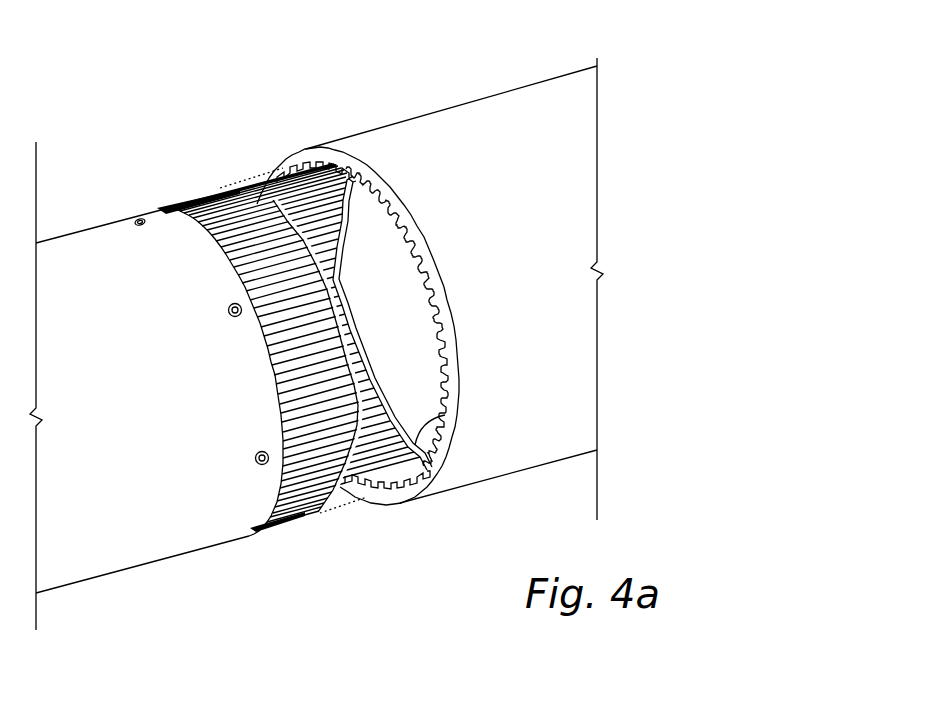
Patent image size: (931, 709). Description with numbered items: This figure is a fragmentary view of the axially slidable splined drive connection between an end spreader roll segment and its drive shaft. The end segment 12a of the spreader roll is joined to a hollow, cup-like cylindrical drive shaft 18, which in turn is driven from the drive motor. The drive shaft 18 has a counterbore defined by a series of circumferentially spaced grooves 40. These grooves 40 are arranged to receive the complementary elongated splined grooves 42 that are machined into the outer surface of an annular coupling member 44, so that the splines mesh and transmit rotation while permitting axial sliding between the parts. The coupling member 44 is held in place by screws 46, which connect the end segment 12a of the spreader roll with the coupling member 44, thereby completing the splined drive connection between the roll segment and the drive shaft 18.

The end segment 12a is at (57, 277).
The drive shaft 18 is at (366, 150).
The grooves 40 is at (402, 490).
The splined grooves 42 is at (325, 435).
The annular coupling member 44 is at (212, 212).
The screws 46 is at (262, 467).